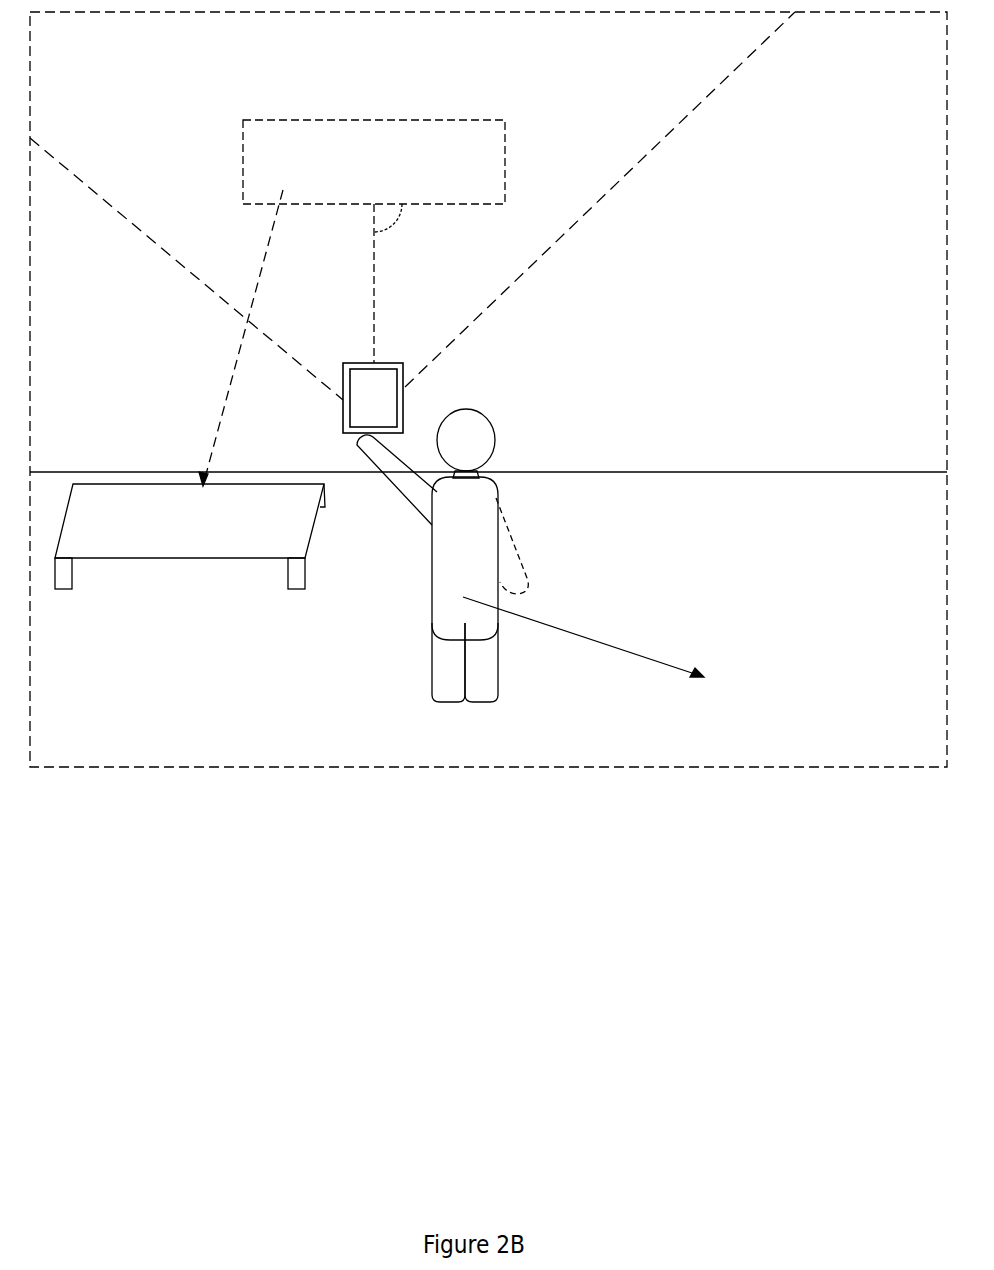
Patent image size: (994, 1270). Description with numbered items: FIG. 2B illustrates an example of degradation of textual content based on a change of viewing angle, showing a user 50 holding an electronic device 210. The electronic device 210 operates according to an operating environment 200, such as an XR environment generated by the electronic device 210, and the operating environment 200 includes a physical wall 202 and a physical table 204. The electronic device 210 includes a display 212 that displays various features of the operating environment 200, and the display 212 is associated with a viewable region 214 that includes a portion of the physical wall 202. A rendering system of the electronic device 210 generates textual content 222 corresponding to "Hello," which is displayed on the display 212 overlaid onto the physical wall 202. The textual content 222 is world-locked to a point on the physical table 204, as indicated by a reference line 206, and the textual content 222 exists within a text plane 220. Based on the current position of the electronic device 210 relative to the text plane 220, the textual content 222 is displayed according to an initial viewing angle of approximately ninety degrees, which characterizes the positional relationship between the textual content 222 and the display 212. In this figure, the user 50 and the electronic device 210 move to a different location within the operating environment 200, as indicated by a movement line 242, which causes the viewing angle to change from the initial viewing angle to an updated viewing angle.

The operating environment 200 is at (943, 32).
The physical wall 202 is at (622, 70).
The physical table 204 is at (190, 536).
The reference line 206 is at (224, 407).
The electronic device 210 is at (347, 432).
The display 212 is at (375, 405).
The viewable region 214 is at (693, 113).
The text plane 220 is at (483, 118).
The textual content 222 is at (280, 150).
The movement line 242 is at (622, 650).
The user 50 is at (486, 672).